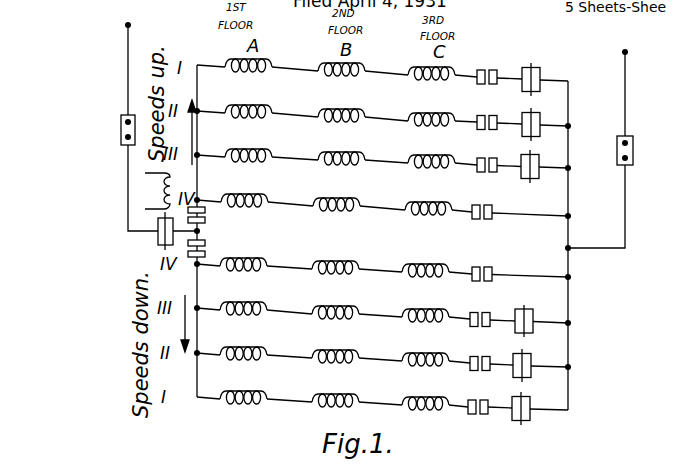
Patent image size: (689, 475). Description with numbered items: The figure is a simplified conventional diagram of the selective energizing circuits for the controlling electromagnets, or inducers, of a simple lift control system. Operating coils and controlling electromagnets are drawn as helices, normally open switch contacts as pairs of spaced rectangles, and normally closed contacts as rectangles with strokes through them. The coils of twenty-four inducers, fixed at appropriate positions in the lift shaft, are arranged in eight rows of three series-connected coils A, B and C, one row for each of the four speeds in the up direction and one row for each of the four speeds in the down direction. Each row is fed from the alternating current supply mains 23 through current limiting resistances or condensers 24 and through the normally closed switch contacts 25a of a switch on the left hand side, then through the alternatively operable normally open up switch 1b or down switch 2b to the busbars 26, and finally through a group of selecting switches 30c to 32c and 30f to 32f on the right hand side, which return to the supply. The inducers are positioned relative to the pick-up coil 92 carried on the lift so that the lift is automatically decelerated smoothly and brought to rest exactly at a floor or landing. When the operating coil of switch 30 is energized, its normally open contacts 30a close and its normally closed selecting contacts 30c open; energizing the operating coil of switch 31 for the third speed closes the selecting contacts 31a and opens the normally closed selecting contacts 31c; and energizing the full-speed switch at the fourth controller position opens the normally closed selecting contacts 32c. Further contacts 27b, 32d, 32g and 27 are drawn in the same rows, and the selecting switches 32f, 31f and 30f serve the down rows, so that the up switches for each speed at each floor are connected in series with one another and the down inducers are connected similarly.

The alternating current supply mains 23 is at (626, 53).
The current limiting resistances or condensers 24 is at (631, 146).
The normally closed switch contacts 25a is at (157, 240).
The busbars 26 is at (204, 332).
The pick up coil 92 is at (160, 192).
The up switch 1b is at (205, 212).
The down switch 2b is at (205, 253).
The contacts 27b is at (477, 81).
The normally closed selecting contacts of switch 30 30c is at (549, 66).
The normally open contacts of switch 30 30a is at (477, 128).
The normally closed selecting contacts of switch 31 31c is at (536, 120).
The selecting contacts of switch 31 31a is at (477, 169).
The normally closed selecting contacts of switch 32 32c is at (535, 162).
The contacts 32d is at (492, 205).
The contacts 32g is at (493, 258).
The switch 31 is at (475, 313).
The selecting switch 32f is at (531, 328).
The switch 30 is at (481, 356).
The selecting switch 31f is at (530, 371).
The contacts 27 is at (479, 401).
The selecting switch 30f is at (530, 413).